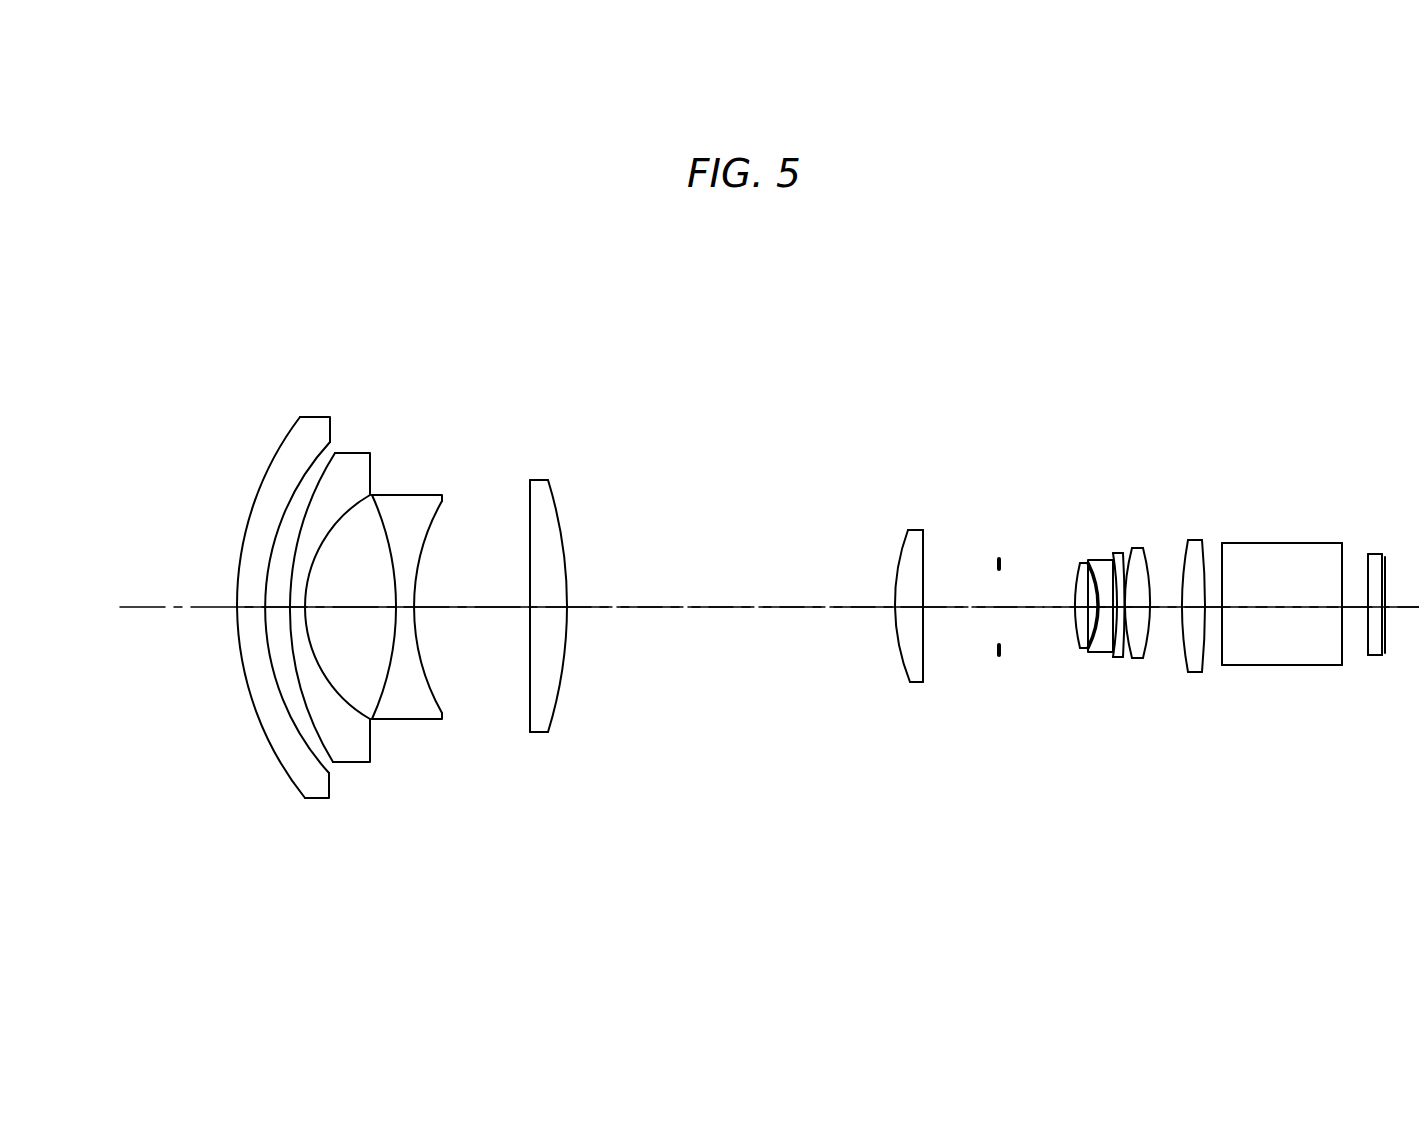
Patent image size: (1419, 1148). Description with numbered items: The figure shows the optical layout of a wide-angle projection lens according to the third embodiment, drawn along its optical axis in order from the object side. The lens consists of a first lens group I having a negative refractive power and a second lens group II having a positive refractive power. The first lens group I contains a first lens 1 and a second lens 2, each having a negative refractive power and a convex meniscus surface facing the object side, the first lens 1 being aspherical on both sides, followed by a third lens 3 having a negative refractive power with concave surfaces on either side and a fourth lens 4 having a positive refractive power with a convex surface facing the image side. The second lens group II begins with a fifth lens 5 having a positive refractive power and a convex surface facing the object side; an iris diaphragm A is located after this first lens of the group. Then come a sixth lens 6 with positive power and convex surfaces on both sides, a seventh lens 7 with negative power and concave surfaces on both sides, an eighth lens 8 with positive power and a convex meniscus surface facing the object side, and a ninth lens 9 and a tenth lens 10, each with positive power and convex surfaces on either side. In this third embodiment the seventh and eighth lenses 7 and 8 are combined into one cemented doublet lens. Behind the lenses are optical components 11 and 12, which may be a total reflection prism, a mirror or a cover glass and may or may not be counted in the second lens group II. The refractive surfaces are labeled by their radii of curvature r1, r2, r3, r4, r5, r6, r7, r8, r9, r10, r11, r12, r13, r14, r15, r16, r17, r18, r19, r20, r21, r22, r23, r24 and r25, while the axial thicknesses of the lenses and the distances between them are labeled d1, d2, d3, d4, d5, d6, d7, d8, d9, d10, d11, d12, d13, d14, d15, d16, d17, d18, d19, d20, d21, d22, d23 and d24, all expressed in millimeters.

The first lens group I is at (543, 310).
The second lens group II is at (1215, 383).
The first lens 1 is at (292, 360).
The second lens 2 is at (367, 358).
The third lens 3 is at (455, 360).
The fourth lens 4 is at (560, 360).
The fifth lens 5 is at (925, 428).
The sixth lens 6 is at (1053, 433).
The seventh lens 7 is at (1108, 437).
The eighth lens 8 is at (1138, 430).
The ninth lens 9 is at (1177, 430).
The tenth lens 10 is at (1222, 457).
The optical component 11 is at (1298, 462).
The optical component 12 is at (1340, 455).
The iris diaphragm A is at (998, 652).
The radius of curvature of refractive surface r1 is at (266, 463).
The radius of curvature of refractive surface r2 is at (303, 478).
The radius of curvature of refractive surface r3 is at (322, 470).
The radius of curvature of refractive surface r4 is at (355, 500).
The radius of curvature of refractive surface r5 is at (384, 525).
The radius of curvature of refractive surface r6 is at (433, 527).
The radius of curvature of refractive surface r7 is at (529, 525).
The radius of curvature of refractive surface r8 is at (562, 535).
The radius of curvature of refractive surface r9 is at (903, 550).
The radius of curvature of refractive surface r10 is at (925, 550).
The radius of curvature of refractive surface r11 is at (999, 558).
The radius of curvature of refractive surface r12 is at (1078, 562).
The radius of curvature of refractive surface r13 is at (1087, 562).
The radius of curvature of refractive surface r14 is at (1110, 560).
The radius of curvature of refractive surface r15 is at (1111, 553).
The radius of curvature of refractive surface r16 is at (1124, 553).
The radius of curvature of refractive surface r17 is at (1134, 548).
The radius of curvature of refractive surface r18 is at (1147, 560).
The radius of curvature of refractive surface r19 is at (1188, 540).
The radius of curvature of refractive surface r20 is at (1203, 540).
The radius of curvature of refractive surface r21 is at (1224, 560).
The radius of curvature of refractive surface r22 is at (1342, 572).
The radius of curvature of refractive surface r23 is at (1366, 576).
The radius of curvature of refractive surface r24 is at (1382, 566).
The radius of curvature of refractive surface r25 is at (1388, 576).
The lens thickness or lens distance d1 is at (252, 607).
The lens thickness or lens distance d2 is at (275, 607).
The lens thickness or lens distance d3 is at (298, 607).
The lens thickness or lens distance d4 is at (357, 607).
The lens thickness or lens distance d5 is at (405, 607).
The lens thickness or lens distance d6 is at (472, 607).
The lens thickness or lens distance d7 is at (553, 607).
The lens thickness or lens distance d8 is at (733, 607).
The lens thickness or lens distance d9 is at (910, 607).
The lens thickness or lens distance d10 is at (973, 607).
The lens thickness or lens distance d11 is at (1032, 607).
The lens thickness or lens distance d12 is at (1080, 607).
The lens thickness or lens distance d13 is at (1093, 607).
The lens thickness or lens distance d14 is at (1104, 607).
The lens thickness or lens distance d15 is at (1117, 607).
The lens thickness or lens distance d16 is at (1127, 607).
The lens thickness or lens distance d17 is at (1140, 607).
The lens thickness or lens distance d18 is at (1160, 607).
The lens thickness or lens distance d19 is at (1188, 607).
The lens thickness or lens distance d20 is at (1212, 607).
The lens thickness or lens distance d21 is at (1280, 607).
The lens thickness or lens distance d22 is at (1357, 607).
The lens thickness or lens distance d23 is at (1373, 607).
The lens thickness or lens distance d24 is at (1390, 607).